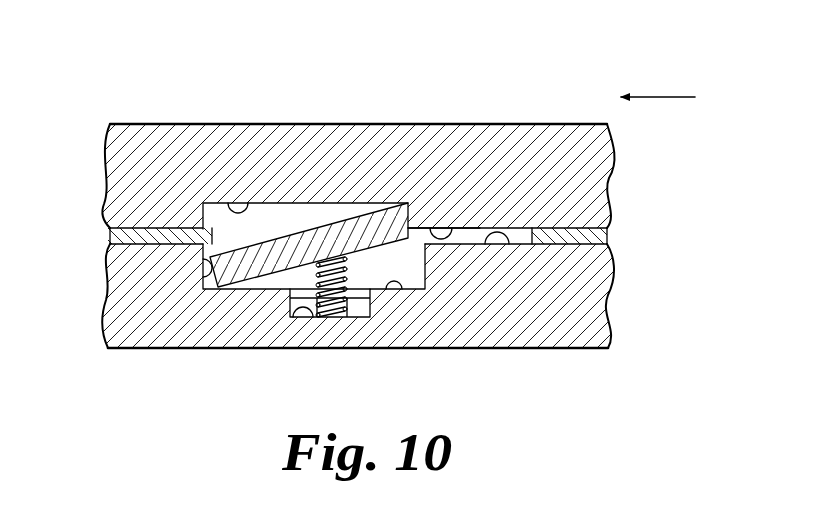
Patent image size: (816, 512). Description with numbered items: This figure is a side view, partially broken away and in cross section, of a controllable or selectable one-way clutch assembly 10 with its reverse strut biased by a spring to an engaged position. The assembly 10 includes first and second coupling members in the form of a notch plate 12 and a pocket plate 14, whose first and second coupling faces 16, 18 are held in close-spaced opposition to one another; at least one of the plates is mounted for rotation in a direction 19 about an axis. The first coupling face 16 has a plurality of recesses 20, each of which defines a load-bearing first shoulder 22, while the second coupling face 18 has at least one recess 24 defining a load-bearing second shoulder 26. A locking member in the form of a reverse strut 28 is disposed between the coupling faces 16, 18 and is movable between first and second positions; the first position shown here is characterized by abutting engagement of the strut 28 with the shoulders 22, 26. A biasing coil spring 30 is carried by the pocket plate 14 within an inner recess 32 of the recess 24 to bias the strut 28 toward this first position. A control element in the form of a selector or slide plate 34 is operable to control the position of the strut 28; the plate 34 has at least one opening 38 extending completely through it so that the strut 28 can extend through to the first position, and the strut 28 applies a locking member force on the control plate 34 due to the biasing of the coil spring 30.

The one-way clutch assembly 10 is at (556, 63).
The notch plate 12 is at (618, 185).
The pocket plate 14 is at (619, 285).
The first coupling face 16 is at (453, 228).
The second coupling face 18 is at (508, 246).
The direction of rotation 19 is at (662, 97).
The recess 20 is at (223, 207).
The first shoulder 22 is at (420, 226).
The recess 24 is at (388, 287).
The second shoulder 26 is at (210, 283).
The reverse strut 28 is at (343, 212).
The coil spring 30 is at (348, 280).
The inner recess 32 is at (282, 312).
The selector plate 34 is at (167, 219).
The opening 38 is at (531, 236).